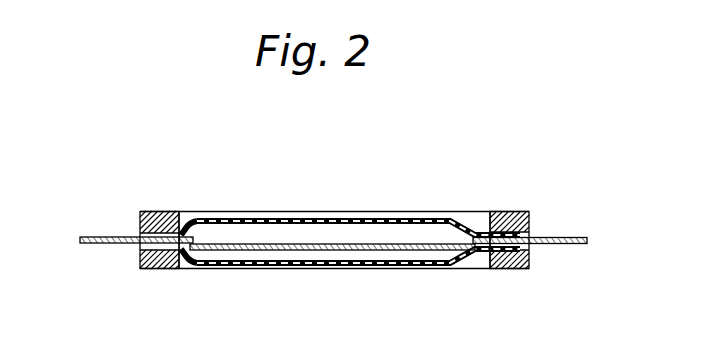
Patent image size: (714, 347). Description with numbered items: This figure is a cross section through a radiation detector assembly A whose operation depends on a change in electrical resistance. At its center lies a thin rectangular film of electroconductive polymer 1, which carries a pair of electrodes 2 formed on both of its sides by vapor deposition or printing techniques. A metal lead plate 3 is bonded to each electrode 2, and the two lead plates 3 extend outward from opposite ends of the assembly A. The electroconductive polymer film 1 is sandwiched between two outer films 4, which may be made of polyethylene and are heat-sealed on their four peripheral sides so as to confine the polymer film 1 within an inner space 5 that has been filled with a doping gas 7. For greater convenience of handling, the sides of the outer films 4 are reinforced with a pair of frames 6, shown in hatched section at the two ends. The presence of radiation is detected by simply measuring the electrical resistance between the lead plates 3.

The electroconductive polymer film 1 is at (327, 251).
The electrode 2 is at (185, 222).
The metal lead plate 3 is at (100, 245).
The outer film 4 is at (260, 218).
The inner space 5 is at (289, 232).
The frame 6 is at (155, 210).
The doping gas 7 is at (358, 230).
The resistor assembly A is at (462, 160).